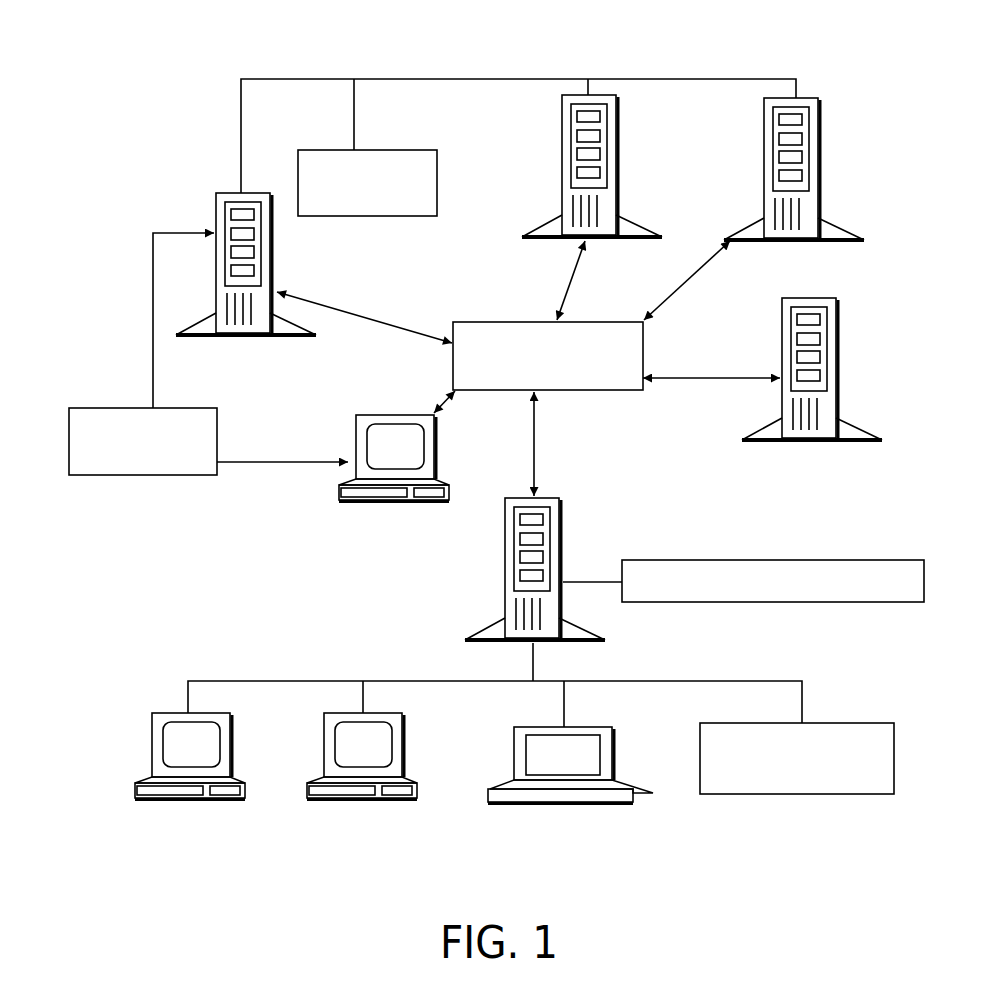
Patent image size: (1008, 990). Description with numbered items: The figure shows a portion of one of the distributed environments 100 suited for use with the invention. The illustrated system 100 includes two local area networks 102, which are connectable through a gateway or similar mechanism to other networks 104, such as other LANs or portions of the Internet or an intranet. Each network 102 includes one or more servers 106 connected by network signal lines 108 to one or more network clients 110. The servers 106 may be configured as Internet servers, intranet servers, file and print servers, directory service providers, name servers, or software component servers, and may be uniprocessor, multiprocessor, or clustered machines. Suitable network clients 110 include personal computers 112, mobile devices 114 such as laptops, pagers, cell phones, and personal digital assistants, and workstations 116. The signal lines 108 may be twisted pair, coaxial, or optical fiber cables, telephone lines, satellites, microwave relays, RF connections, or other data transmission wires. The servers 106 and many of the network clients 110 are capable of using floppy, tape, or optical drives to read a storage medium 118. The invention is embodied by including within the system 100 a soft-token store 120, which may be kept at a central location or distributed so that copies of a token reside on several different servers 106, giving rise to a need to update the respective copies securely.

The distributed environment 100 is at (484, 424).
The local area network 102 is at (505, 381).
The other networks 104 is at (743, 555).
The server 106 is at (491, 367).
The network signal line 108 is at (459, 403).
The network client 110 is at (423, 498).
The personal computer 112 is at (349, 458).
The mobile device 114 is at (504, 498).
The workstation 116 is at (780, 369).
The storage medium 118 is at (196, 354).
The soft-token store 120 is at (585, 537).